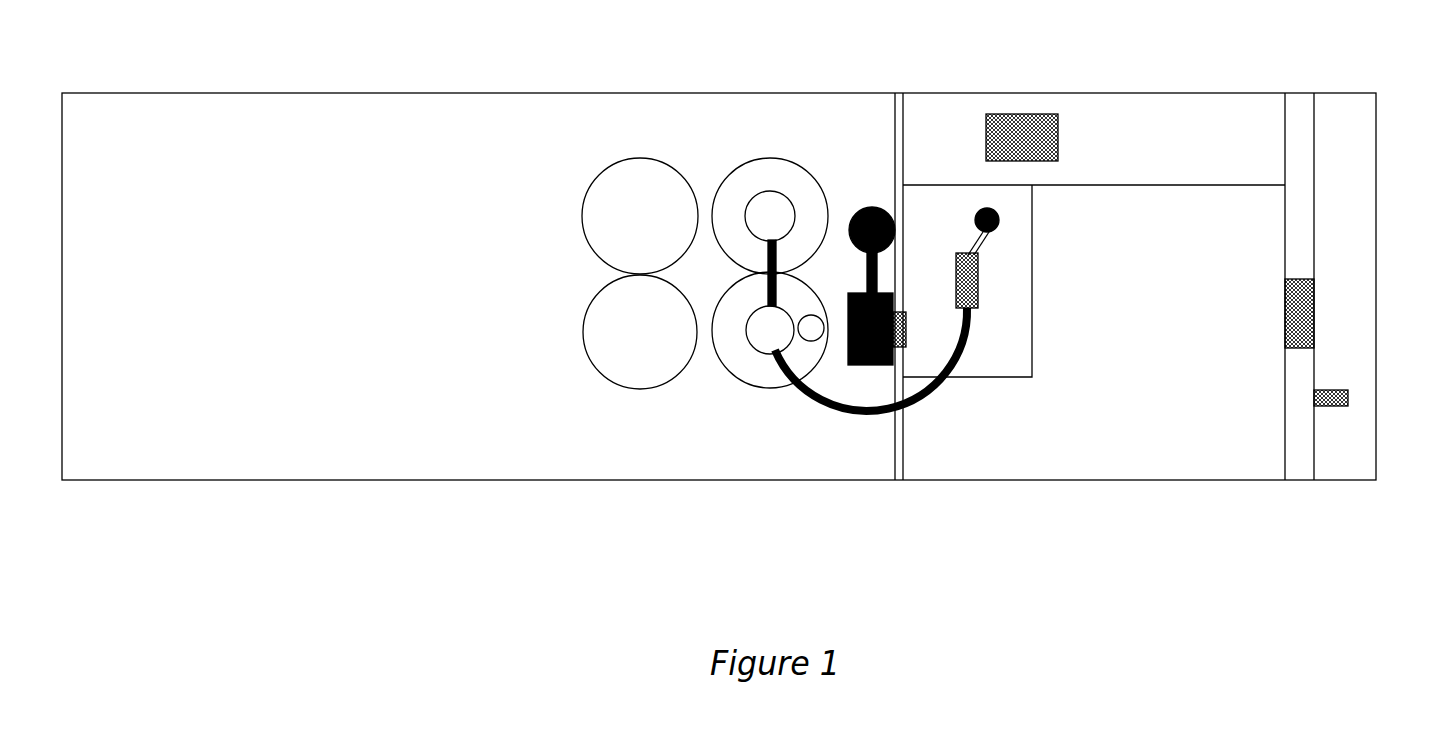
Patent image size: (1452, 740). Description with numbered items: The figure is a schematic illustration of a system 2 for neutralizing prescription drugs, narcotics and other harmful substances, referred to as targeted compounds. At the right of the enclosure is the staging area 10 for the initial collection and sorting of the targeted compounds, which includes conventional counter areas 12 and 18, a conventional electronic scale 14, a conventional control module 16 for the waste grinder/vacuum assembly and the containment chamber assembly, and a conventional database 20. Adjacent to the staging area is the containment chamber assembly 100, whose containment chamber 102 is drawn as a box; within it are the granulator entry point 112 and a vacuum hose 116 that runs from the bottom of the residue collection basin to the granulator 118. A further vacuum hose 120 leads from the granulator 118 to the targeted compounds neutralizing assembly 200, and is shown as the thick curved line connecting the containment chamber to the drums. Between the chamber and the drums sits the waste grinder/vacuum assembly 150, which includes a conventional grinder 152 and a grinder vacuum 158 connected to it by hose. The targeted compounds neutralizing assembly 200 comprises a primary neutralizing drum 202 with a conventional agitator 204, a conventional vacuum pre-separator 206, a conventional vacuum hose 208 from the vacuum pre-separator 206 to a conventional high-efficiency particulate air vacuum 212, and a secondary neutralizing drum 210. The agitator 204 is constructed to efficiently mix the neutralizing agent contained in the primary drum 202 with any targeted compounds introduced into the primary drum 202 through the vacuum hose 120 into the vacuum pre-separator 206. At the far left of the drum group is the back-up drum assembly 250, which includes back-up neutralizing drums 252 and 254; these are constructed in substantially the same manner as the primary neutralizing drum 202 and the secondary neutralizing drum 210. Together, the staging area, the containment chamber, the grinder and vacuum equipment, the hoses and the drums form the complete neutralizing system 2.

The system 2 is at (1122, 525).
The staging area 10 is at (1218, 292).
The counter area 12 is at (1360, 465).
The electronic scale 14 is at (1305, 315).
The control module 16 is at (1350, 393).
The counter area 18 is at (1195, 118).
The database 20 is at (1030, 114).
The containment chamber assembly 100 is at (1004, 309).
The containment chamber 102 is at (1033, 345).
The granulator entry point 112 is at (1000, 222).
The vacuum hose 116 is at (983, 255).
The granulator 118 is at (1037, 282).
The vacuum hose 120 is at (822, 408).
The waste grinder/vacuum assembly 150 is at (884, 199).
The grinder 152 is at (848, 312).
The grinder vacuum 158 is at (902, 245).
The targeted compounds neutralizing assembly 200 is at (746, 246).
The primary neutralizing drum 202 is at (718, 362).
The agitator 204 is at (812, 330).
The vacuum pre-separator 206 is at (767, 330).
The vacuum hose 208 is at (715, 255).
The secondary neutralizing drum 210 is at (805, 180).
The HEPA vacuum 212 is at (788, 215).
The back-up drum assembly 250 is at (610, 211).
The back-up neutralizing drum 252 is at (600, 320).
The back-up neutralizing drum 254 is at (605, 183).